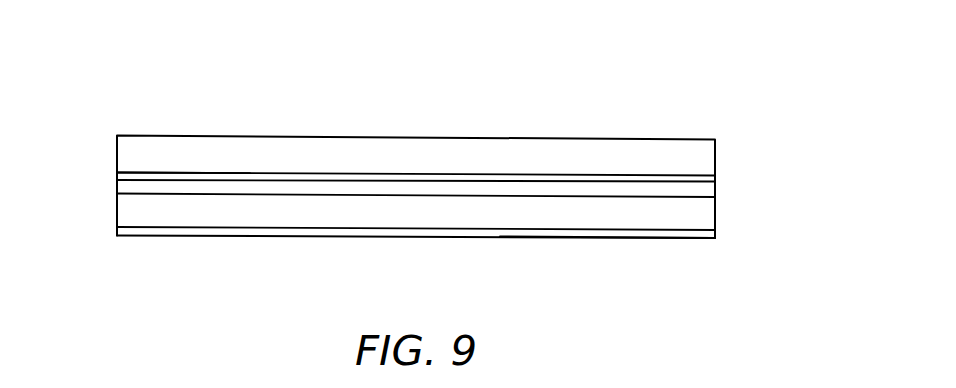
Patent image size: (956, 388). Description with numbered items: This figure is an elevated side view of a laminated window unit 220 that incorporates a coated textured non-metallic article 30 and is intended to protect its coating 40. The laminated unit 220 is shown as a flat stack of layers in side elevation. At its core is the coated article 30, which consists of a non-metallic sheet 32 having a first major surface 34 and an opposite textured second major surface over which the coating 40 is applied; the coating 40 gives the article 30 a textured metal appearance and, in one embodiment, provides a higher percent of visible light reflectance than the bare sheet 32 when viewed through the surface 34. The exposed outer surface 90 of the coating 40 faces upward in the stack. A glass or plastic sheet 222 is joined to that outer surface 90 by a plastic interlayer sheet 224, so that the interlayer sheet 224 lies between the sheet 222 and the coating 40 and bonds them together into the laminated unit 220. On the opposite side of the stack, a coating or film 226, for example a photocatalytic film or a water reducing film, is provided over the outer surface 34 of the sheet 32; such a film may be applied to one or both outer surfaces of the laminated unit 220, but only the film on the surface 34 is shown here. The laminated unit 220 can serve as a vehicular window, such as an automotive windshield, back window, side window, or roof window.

The laminated unit 220 is at (477, 127).
The glass or plastic sheet 222 is at (680, 152).
The plastic interlayer sheet 224 is at (124, 176).
The outer surface of the coating 90 is at (582, 177).
The coating 40 is at (716, 192).
The first major surface 34 is at (398, 230).
The non-metallic sheet 32 is at (707, 230).
The coating or film 226 is at (537, 243).
The coated textured non-metallic article 30 is at (752, 219).